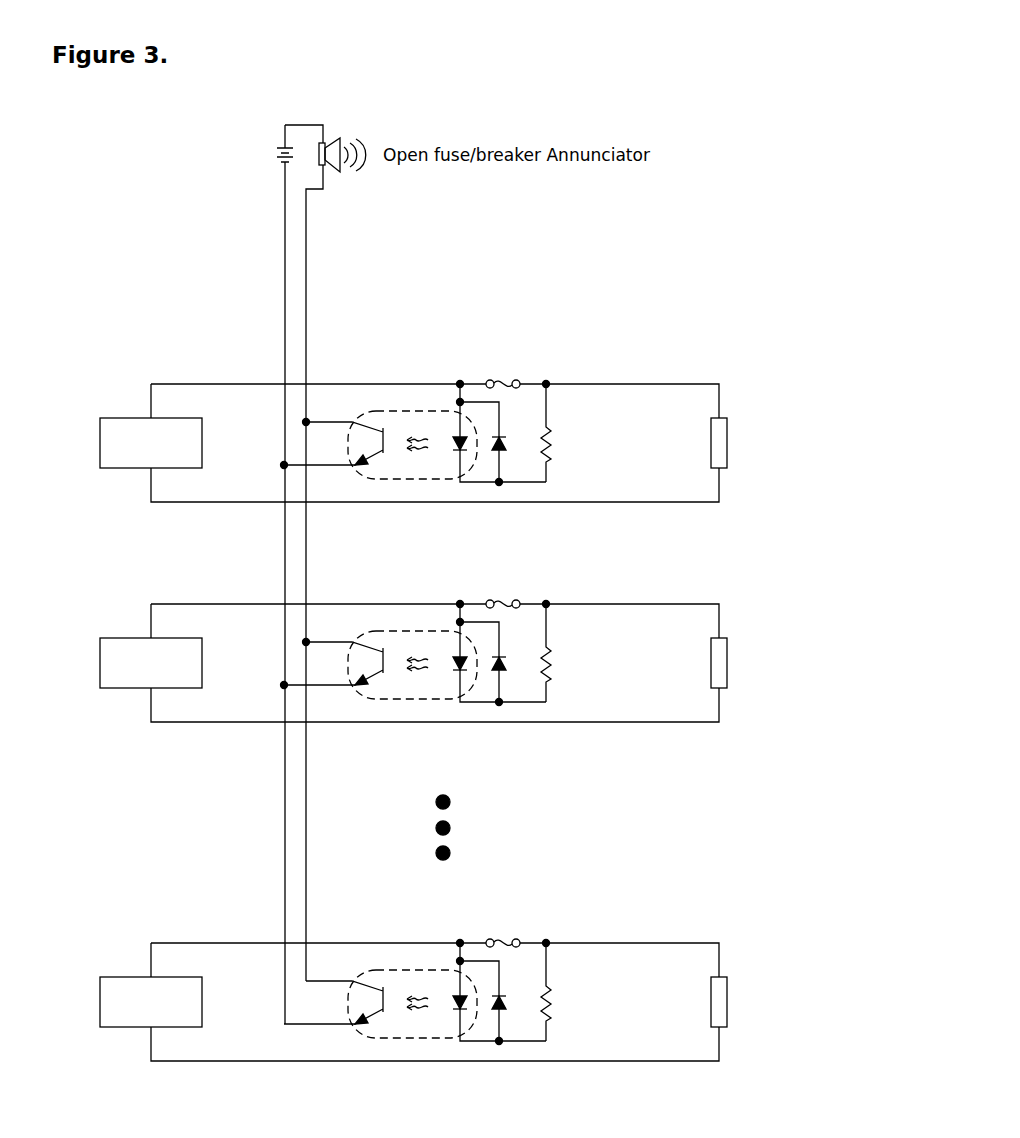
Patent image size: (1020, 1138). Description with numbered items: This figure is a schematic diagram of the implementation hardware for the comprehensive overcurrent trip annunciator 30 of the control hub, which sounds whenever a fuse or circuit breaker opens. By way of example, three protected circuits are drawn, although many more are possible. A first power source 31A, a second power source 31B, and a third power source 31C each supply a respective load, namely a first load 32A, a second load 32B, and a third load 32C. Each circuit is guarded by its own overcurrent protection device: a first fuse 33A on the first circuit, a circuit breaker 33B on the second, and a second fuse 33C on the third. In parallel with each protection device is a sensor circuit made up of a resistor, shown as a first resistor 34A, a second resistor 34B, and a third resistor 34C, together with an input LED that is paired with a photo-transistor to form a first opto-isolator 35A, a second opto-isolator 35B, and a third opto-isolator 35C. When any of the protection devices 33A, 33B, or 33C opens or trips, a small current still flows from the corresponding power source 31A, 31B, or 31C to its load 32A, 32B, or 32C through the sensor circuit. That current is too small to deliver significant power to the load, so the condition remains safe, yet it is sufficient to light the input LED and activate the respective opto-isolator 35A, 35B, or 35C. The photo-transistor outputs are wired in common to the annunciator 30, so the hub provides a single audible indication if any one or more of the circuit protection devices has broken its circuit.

The overcurrent trip annunciator 30 is at (332, 138).
The first power source 31A is at (100, 443).
The second power source 31B is at (117, 672).
The third power source 31C is at (117, 1011).
The first load 32A is at (755, 439).
The second load 32B is at (755, 659).
The third load 32C is at (756, 998).
The first fuse 33A is at (496, 369).
The circuit breaker 33B is at (496, 589).
The second fuse 33C is at (496, 928).
The first resistor 34A is at (569, 433).
The second resistor 34B is at (568, 653).
The third resistor 34C is at (568, 992).
The first opto-isolator 35A is at (433, 479).
The second opto-isolator 35B is at (417, 675).
The third opto-isolator 35C is at (417, 1014).